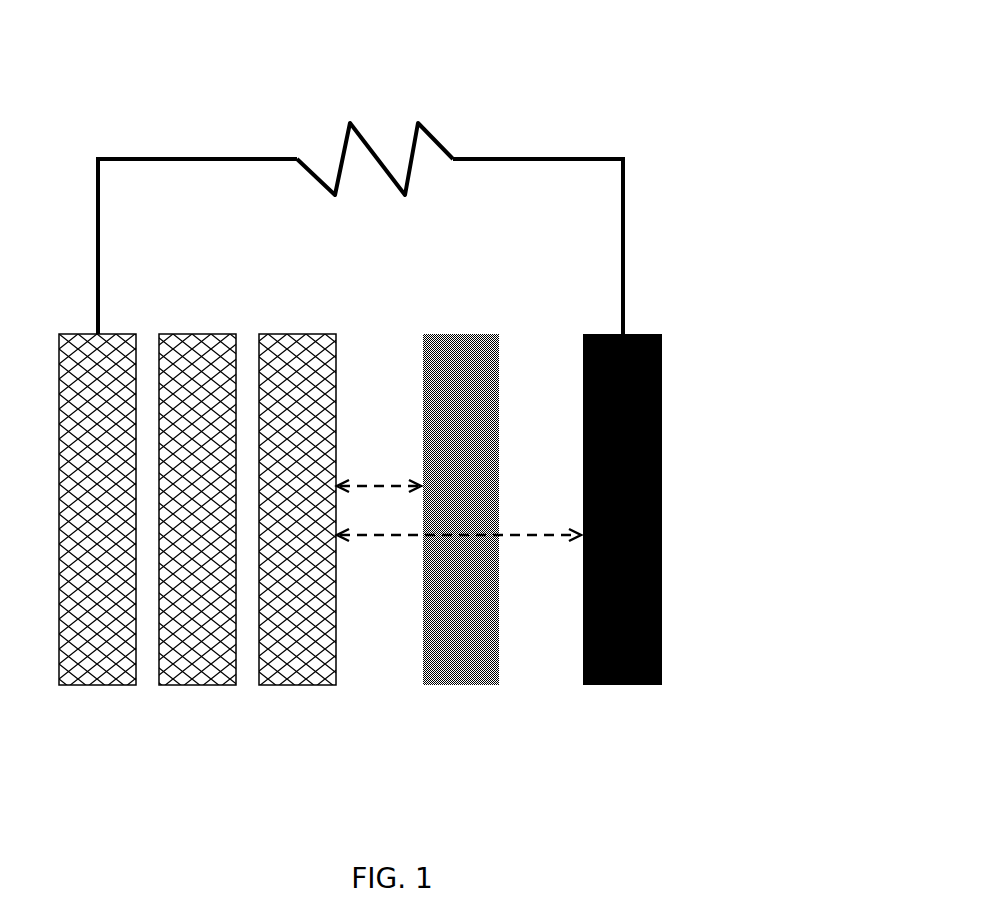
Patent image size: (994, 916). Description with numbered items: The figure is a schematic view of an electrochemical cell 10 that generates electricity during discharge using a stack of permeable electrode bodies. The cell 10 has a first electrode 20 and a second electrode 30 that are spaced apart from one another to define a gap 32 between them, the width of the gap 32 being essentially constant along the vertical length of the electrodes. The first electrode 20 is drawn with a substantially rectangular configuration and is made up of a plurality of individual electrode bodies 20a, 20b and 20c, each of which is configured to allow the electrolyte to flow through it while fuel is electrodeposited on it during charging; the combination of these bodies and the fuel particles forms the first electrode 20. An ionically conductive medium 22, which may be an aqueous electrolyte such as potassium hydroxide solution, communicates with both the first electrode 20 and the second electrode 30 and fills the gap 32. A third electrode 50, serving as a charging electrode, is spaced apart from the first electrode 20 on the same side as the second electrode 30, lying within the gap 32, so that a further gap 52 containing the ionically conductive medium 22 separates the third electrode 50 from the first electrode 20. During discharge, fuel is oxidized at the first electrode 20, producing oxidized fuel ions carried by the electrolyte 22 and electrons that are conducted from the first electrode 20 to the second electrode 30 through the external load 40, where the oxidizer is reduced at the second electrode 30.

The electrochemical cell 10 is at (362, 167).
The first electrode 20 is at (53, 747).
The electrode body 20a is at (97, 540).
The electrode body 20b is at (197, 540).
The electrode body 20c is at (297, 540).
The ionically conductive medium 22 is at (379, 509).
The second electrode 30 is at (622, 540).
The gap 32 is at (459, 521).
The external load 40 is at (375, 125).
The third electrode 50 is at (461, 540).
The gap 52 is at (379, 470).